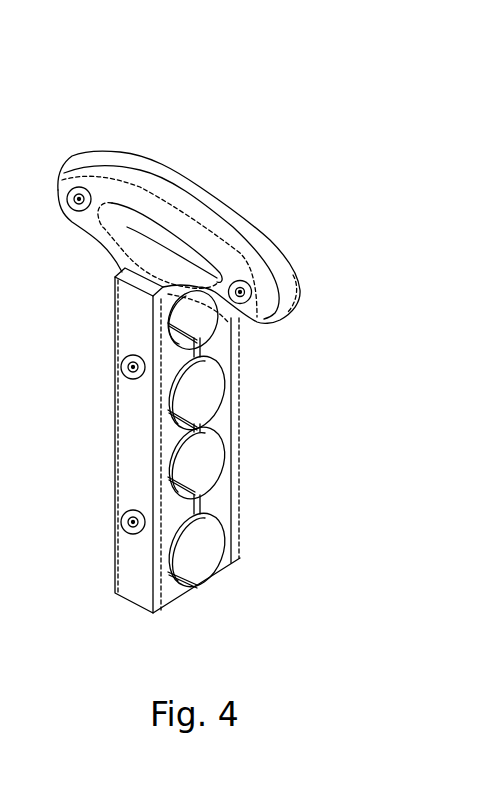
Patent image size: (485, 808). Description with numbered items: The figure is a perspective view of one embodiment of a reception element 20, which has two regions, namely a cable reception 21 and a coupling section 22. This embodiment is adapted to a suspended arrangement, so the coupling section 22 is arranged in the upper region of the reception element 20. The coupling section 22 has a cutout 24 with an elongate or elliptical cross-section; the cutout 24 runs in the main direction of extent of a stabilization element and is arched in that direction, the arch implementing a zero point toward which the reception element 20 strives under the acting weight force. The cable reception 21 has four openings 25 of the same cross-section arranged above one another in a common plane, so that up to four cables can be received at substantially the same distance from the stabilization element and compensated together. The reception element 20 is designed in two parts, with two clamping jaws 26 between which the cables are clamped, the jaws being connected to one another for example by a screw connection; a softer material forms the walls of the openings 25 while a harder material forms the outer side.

The reception element 20 is at (208, 140).
The cable reception 21 is at (226, 510).
The coupling section 22 is at (272, 276).
The cutout 24 is at (124, 224).
The openings 25 is at (173, 467).
The clamping jaws 26 is at (191, 579).